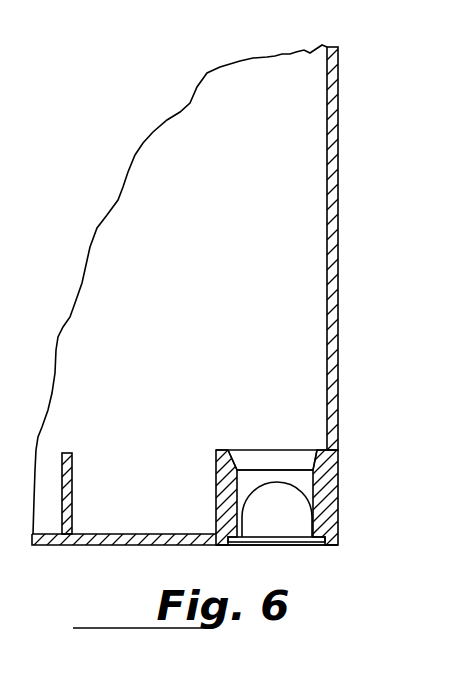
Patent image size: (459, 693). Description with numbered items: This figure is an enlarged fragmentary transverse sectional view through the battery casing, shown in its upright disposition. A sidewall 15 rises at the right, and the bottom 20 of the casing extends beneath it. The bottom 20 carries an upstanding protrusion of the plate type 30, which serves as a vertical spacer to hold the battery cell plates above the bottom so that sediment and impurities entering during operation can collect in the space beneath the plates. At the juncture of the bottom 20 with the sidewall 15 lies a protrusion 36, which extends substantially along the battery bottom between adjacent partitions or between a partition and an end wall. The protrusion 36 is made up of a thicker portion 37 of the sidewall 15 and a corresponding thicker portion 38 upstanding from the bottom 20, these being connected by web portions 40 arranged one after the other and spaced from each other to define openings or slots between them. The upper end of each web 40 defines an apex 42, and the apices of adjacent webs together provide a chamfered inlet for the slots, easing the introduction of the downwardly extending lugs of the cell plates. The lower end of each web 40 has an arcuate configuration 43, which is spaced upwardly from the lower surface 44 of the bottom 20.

The sidewall 15 is at (334, 293).
The bottom 20 is at (122, 533).
The upstanding protrusion of the plate type 30 is at (66, 473).
The protrusion 36 is at (209, 449).
The thicker portion of the sidewall 37 is at (324, 452).
The thicker portion upstanding from the bottom 38 is at (222, 450).
The web portion 40 is at (293, 470).
The apex 42 is at (260, 460).
The arcuate configuration 43 is at (295, 472).
The lower surface 44 is at (172, 546).